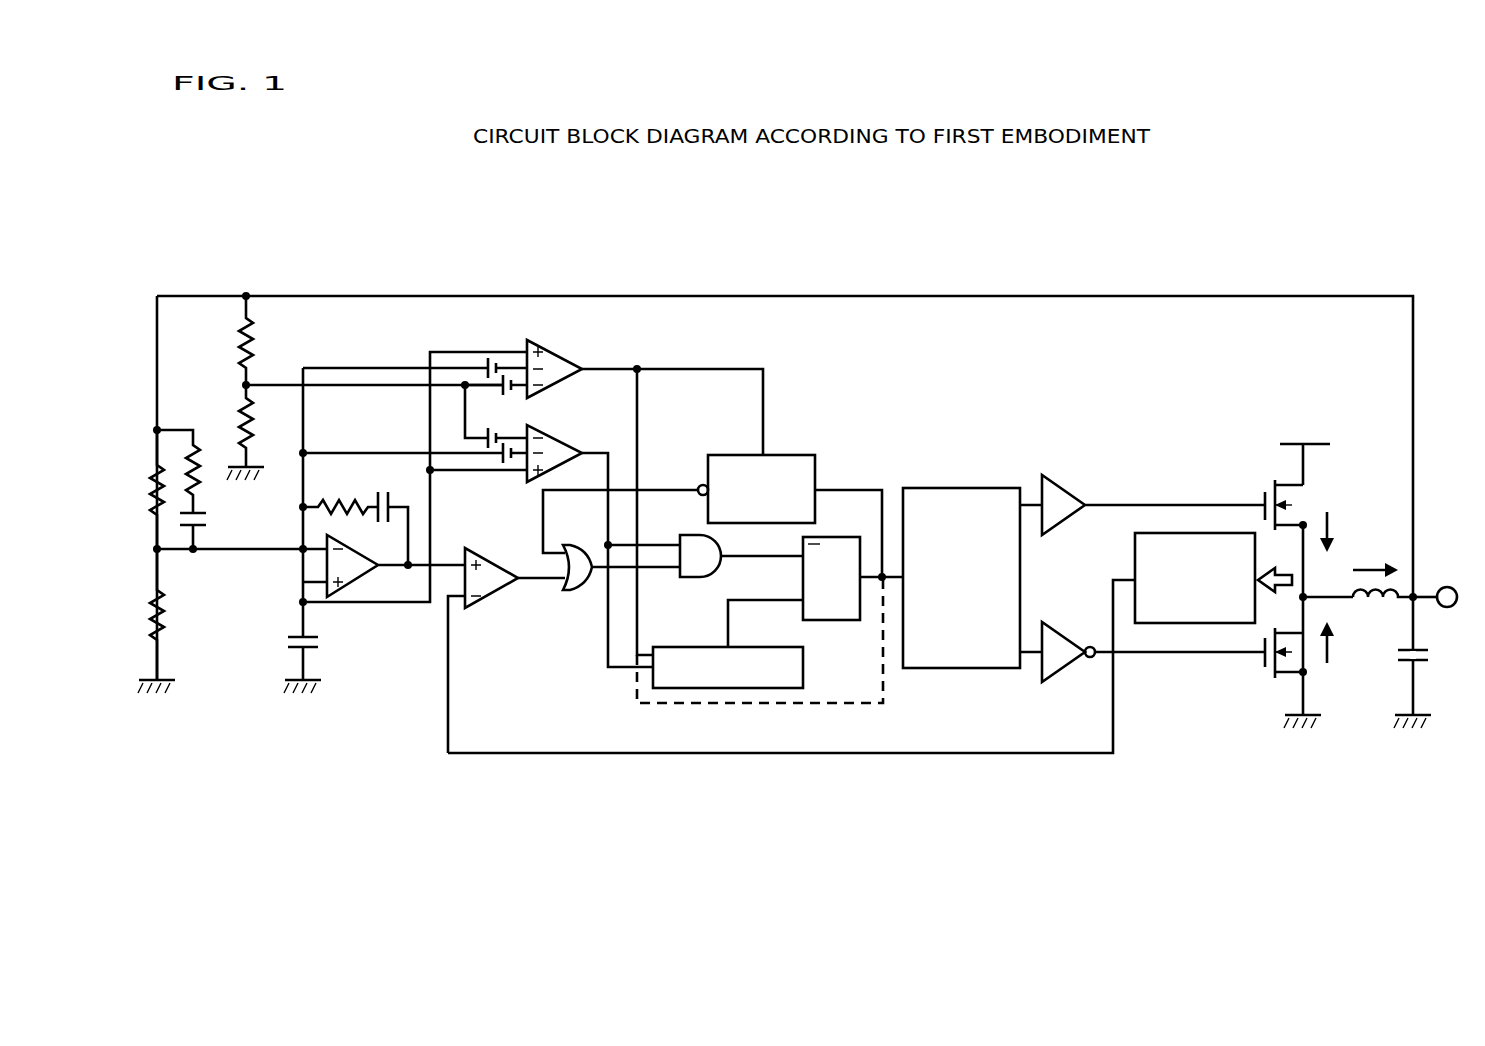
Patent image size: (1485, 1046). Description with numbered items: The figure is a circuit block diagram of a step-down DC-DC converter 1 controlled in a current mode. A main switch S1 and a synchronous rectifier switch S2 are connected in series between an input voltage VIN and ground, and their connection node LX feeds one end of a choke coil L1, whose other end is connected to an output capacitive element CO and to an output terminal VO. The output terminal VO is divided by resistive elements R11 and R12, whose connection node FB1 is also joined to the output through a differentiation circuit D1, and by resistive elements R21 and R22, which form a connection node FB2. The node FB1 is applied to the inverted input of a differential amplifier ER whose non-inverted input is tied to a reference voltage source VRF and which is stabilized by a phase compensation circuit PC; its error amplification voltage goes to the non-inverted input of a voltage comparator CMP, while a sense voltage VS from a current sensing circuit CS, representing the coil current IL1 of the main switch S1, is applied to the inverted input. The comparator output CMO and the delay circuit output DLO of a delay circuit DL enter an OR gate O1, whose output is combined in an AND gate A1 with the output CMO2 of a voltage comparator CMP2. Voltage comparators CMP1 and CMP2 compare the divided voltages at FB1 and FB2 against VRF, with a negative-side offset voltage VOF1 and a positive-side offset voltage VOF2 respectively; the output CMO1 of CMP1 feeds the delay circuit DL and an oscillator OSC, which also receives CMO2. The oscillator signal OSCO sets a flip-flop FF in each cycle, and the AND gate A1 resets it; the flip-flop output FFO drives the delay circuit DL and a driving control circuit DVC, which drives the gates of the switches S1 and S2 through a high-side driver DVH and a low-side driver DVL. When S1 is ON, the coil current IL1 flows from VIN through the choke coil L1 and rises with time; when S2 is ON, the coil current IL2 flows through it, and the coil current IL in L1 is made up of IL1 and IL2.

The step-down DC-DC converter 1 is at (1247, 248).
The resistive element R21 is at (223, 340).
The resistive element R22 is at (228, 432).
The resistive element R11 is at (133, 487).
The resistive element R12 is at (139, 621).
The differentiation circuit D1 is at (207, 443).
The connection node FB1 is at (240, 540).
The connection node FB2 is at (372, 375).
The phase compensation circuit PC is at (405, 492).
The differential amplifier ER is at (357, 572).
The reference voltage source VRF is at (405, 522).
The offset voltage VOF1 is at (507, 372).
The offset voltage VOF2 is at (506, 462).
The voltage comparator CMP1 is at (550, 350).
The voltage comparator CMP2 is at (550, 436).
The output terminal CMO1 is at (672, 501).
The output terminal CMO2 is at (614, 547).
The delay circuit DL is at (728, 455).
The delay circuit output DLO is at (625, 508).
The voltage comparator CMP is at (490, 594).
The output terminal CMO is at (541, 566).
The OR gate O1 is at (566, 588).
The AND gate A1 is at (690, 578).
The oscillator signal OSCO is at (765, 610).
The oscillator OSC is at (732, 690).
The flip-flop FF is at (830, 620).
The output terminal FFO is at (848, 521).
The driving control circuit DVC is at (1005, 488).
The high-side driver DVH is at (1060, 492).
The low-side driver DVL is at (1060, 638).
The current sensing circuit CS is at (1135, 547).
The sense voltage VS is at (791, 669).
The input voltage VIN is at (1305, 450).
The main switch S1 is at (1301, 536).
The synchronous rectifier switch S2 is at (1301, 662).
The coil current IL1 is at (1341, 530).
The coil current IL2 is at (1341, 642).
The coil current IL is at (1375, 559).
The connection node LX is at (1326, 587).
The choke coil L1 is at (1383, 612).
The output terminal VO is at (1435, 585).
The output capacitive element CO is at (1429, 688).